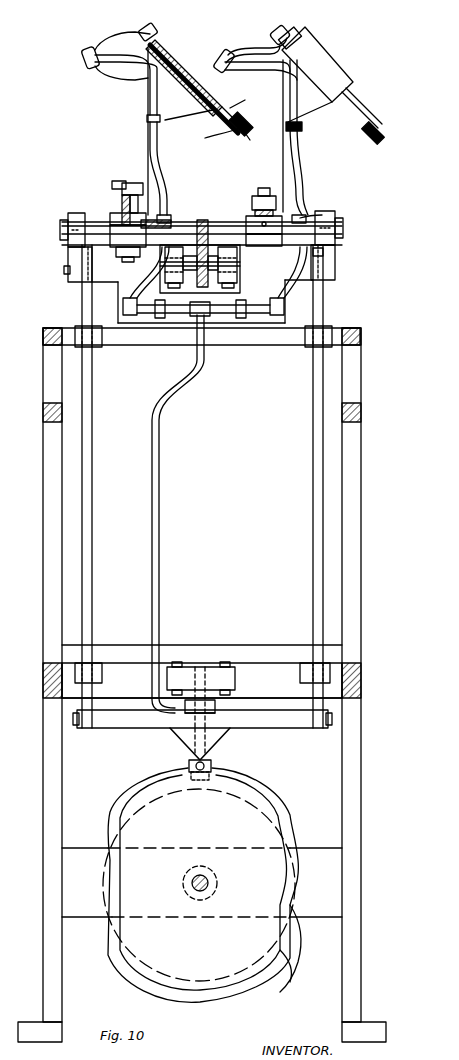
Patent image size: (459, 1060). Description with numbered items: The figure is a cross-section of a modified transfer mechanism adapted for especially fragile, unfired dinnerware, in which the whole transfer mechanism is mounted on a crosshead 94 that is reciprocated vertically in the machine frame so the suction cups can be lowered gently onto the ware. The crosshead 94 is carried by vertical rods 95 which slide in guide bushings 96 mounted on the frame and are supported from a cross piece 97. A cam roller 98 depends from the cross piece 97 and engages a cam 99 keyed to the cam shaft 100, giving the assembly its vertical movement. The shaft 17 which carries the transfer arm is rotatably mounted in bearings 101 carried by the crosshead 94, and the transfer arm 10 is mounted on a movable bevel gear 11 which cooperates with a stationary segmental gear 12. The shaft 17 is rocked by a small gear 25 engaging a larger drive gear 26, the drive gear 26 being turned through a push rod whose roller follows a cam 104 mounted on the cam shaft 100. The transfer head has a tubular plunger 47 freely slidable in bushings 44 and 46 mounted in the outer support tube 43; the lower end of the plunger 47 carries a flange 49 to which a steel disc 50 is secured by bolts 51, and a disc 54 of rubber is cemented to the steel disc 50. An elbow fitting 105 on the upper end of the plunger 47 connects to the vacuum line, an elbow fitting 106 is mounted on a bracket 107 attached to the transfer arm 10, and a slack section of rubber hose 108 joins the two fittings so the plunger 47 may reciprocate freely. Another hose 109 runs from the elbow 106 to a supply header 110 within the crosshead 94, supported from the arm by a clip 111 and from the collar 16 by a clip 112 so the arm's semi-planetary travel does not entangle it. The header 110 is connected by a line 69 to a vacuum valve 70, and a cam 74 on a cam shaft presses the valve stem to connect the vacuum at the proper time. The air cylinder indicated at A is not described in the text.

The transfer arm 10 is at (283, 172).
The movable bevel gear 11 is at (252, 197).
The stationary segmental gear 12 is at (250, 211).
The collar 16 is at (272, 234).
The shaft 17 is at (212, 240).
The small gear 25 is at (202, 218).
The drive gear 26 is at (196, 247).
The outer support tube 43 is at (160, 120).
The bushing 44 is at (214, 92).
The bushing 46 is at (168, 38).
The tubular plunger 47 is at (210, 115).
The flange 49 is at (252, 122).
The steel disc 50 is at (215, 138).
The bolts 51 is at (240, 108).
The resilient disc 54 is at (245, 138).
The line 69 is at (205, 354).
The vacuum valve 70 is at (213, 692).
The cam 74 is at (299, 899).
The crosshead 94 is at (335, 262).
The vertical rods 95 is at (88, 377).
The guide bushings 96 is at (330, 333).
The cross piece 97 is at (130, 728).
The cam roller 98 is at (212, 766).
The cam 99 is at (272, 800).
The cam shaft 100 is at (208, 878).
The bearings 101 is at (82, 212).
The cam 104 is at (262, 835).
The elbow fitting 105 is at (286, 28).
The elbow fitting 106 is at (235, 30).
The bracket 107 is at (284, 72).
The rubber hose 108 is at (276, 28).
The hose 109 is at (300, 160).
The supply header 110 is at (280, 298).
The clip 111 is at (296, 130).
The clip 112 is at (304, 212).
The air cylinder A is at (332, 43).